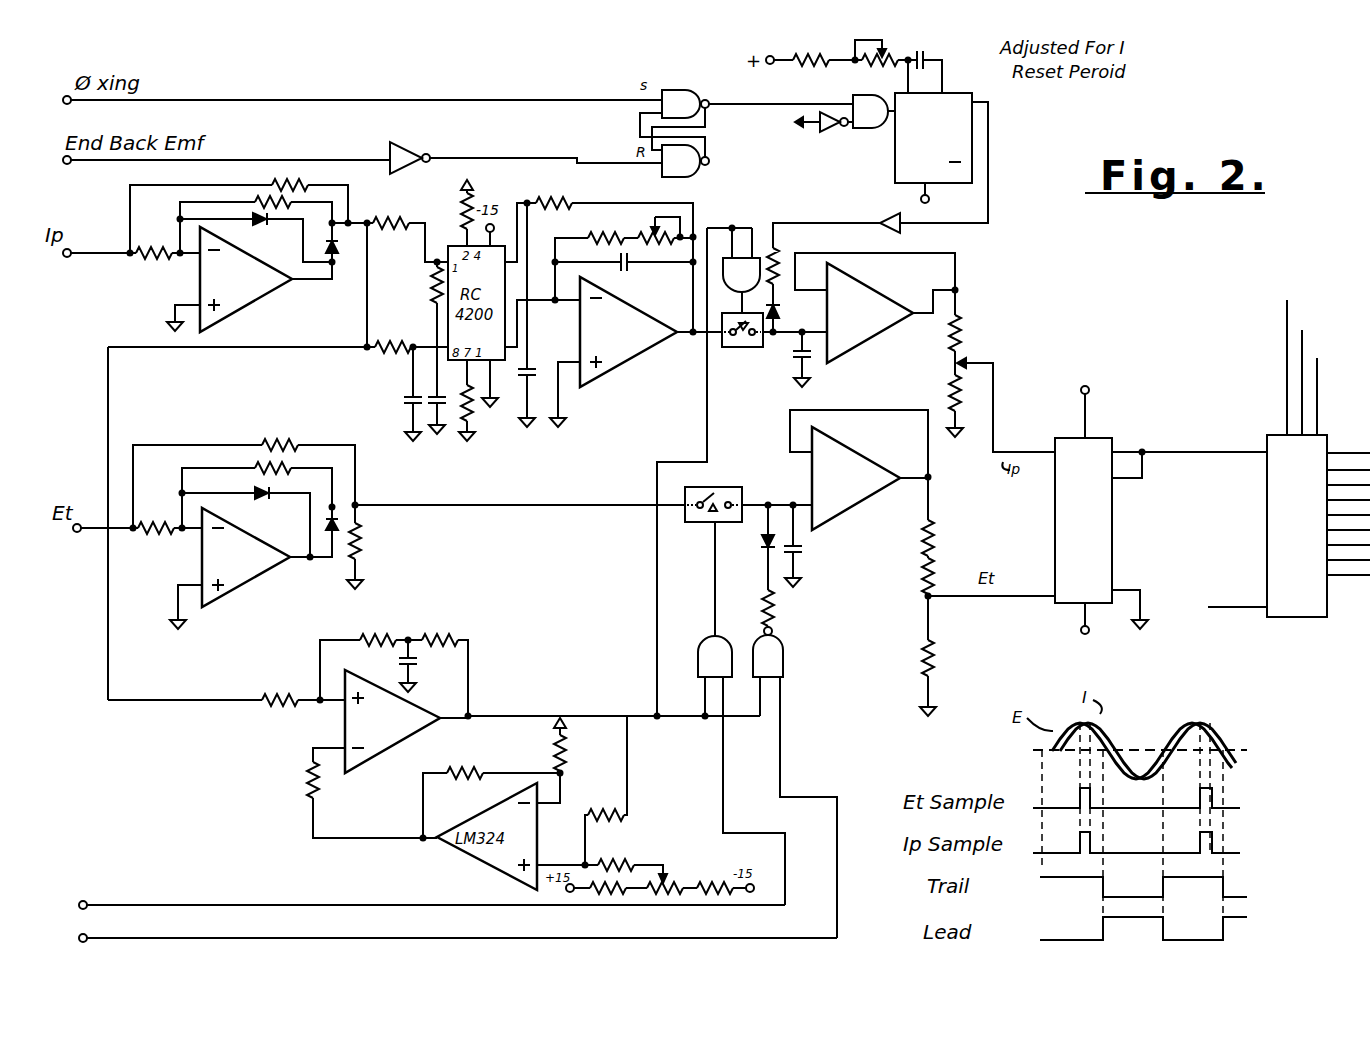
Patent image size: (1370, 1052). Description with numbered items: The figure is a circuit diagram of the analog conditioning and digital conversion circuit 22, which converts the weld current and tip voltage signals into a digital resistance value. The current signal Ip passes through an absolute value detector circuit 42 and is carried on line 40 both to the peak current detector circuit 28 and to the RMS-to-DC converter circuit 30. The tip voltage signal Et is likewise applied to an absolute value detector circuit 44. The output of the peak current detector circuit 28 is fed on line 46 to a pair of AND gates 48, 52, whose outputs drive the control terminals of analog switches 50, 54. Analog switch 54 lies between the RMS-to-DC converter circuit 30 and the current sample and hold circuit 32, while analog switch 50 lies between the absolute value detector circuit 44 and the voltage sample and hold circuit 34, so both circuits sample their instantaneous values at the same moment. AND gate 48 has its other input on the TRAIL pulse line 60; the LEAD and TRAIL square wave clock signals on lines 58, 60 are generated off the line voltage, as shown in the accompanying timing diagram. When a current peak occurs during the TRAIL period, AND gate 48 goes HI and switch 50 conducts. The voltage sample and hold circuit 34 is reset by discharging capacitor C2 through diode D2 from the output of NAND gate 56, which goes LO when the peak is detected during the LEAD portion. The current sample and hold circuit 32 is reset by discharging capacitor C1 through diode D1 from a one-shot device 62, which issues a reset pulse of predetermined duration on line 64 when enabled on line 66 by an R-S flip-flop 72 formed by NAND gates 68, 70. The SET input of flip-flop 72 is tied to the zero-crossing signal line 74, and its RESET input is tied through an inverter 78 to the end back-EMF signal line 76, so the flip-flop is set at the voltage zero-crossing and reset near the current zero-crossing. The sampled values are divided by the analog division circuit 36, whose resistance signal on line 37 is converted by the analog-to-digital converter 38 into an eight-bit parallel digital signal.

The analog conditioning and digital conversion circuit 22 is at (1120, 290).
The peak current detector circuit 28 is at (488, 696).
The RMS-to-DC converter circuit 30 is at (624, 374).
The current sample and hold circuit 32 is at (874, 346).
The voltage sample and hold circuit 34 is at (858, 516).
The analog division circuit 36 is at (1118, 547).
The line 37 is at (1203, 447).
The analog-to-digital converter 38 is at (1293, 622).
The line 40 is at (108, 390).
The absolute value detector circuit 42 is at (284, 297).
The absolute value detector circuit 44 is at (258, 590).
The line 46 is at (527, 716).
The AND gate 48 is at (708, 638).
The analog switch 50 is at (727, 483).
The AND gate 52 is at (757, 263).
The analog switch 54 is at (736, 348).
The NAND gate 56 is at (787, 648).
The LEAD pulse line 58 is at (283, 940).
The TRAIL pulse line 60 is at (247, 903).
The one-shot device 62 is at (975, 140).
The line 64 is at (990, 197).
The line 66 is at (787, 104).
The NAND gate 68 is at (690, 91).
The NAND gate 70 is at (700, 177).
The R-S flip-flop 72 is at (707, 127).
The zero-crossing signal line 74 is at (357, 98).
The end back-EMF signal line 76 is at (320, 158).
The inverter 78 is at (420, 150).
The diode D1 is at (783, 310).
The diode D2 is at (763, 545).
The capacitor C1 is at (815, 362).
The capacitor C2 is at (803, 553).